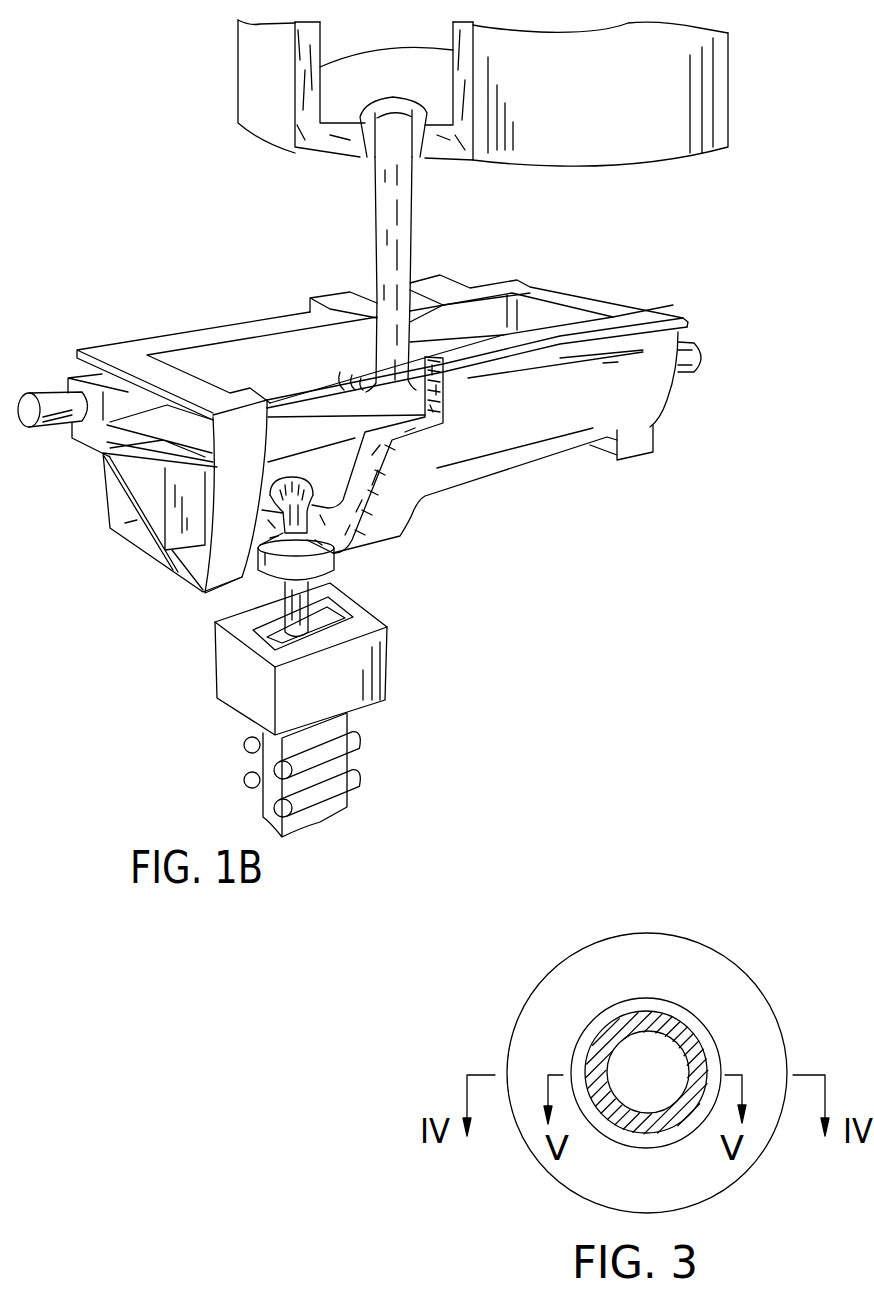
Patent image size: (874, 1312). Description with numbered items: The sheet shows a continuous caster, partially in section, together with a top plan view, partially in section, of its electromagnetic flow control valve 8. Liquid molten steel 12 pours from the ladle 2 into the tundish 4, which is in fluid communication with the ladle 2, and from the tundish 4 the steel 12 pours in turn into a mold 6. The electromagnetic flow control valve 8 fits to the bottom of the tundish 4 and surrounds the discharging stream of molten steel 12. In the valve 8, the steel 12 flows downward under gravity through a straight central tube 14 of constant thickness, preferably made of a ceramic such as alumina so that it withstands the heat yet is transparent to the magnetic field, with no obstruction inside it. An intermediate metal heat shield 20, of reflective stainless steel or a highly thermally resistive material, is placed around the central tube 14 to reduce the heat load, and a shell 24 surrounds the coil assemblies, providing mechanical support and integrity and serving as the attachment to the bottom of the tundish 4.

In FIG. 1B, the ladle 2 is at (725, 62).
In FIG. 1B, the tundish 4 is at (213, 362).
In FIG. 1B, the mold 6 is at (380, 642).
In FIG. 1B, the electromagnetic flow control valve 8 is at (318, 558).
In FIG. 3, the electromagnetic flow control valve 8 is at (690, 1010).
In FIG. 1B, the liquid molten steel 12 is at (407, 240).
In FIG. 3, the liquid molten steel 12 is at (667, 1053).
In FIG. 3, the central tube 14 is at (710, 1062).
In FIG. 3, the intermediate metal heat shield 20 is at (710, 948).
In FIG. 3, the shell 24 is at (650, 940).